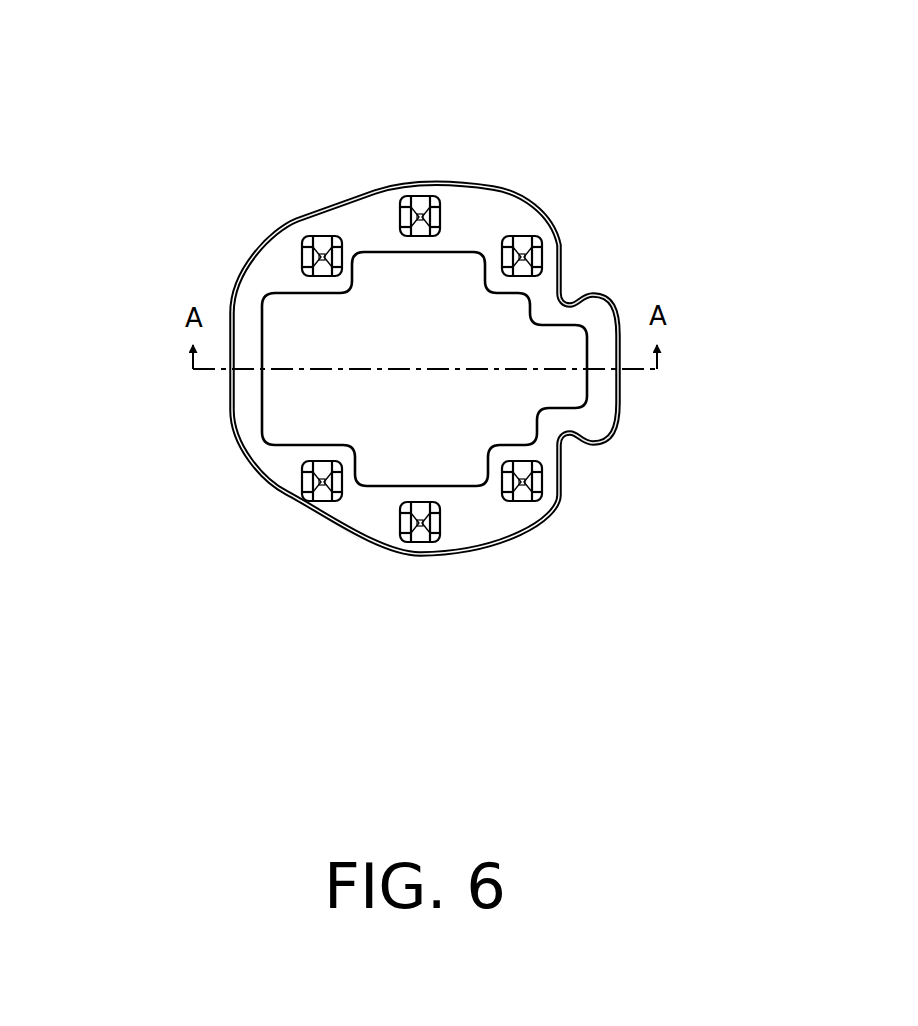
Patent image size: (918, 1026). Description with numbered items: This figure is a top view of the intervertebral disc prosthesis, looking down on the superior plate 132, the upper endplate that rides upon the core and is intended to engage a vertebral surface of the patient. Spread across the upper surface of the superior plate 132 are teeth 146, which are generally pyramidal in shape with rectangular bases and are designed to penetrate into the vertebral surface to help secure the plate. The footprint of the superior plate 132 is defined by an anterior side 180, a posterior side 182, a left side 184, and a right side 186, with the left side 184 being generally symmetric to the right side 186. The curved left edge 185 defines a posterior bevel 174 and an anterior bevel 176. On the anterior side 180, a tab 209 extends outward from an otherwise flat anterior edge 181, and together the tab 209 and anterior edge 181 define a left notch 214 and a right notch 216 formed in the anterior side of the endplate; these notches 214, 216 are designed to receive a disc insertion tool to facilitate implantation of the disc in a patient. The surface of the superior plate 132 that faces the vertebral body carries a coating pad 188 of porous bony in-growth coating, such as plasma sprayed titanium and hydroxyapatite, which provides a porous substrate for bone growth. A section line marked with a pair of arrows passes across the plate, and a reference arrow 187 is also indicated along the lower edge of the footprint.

The superior plate 132 is at (297, 218).
The teeth 146 is at (543, 238).
The posterior bevel 174 is at (338, 192).
The anterior bevel 176 is at (498, 190).
The anterior side 180 is at (562, 480).
The anterior edge 181 is at (572, 251).
The posterior side 182 is at (232, 413).
The left side 184 is at (368, 192).
The left edge 185 is at (420, 174).
The right side 186 is at (360, 540).
The bottom apex point 187 is at (412, 565).
The coating pad 188 is at (455, 463).
The tab 209 is at (605, 396).
The left notch 214 is at (577, 296).
The right notch 216 is at (573, 444).